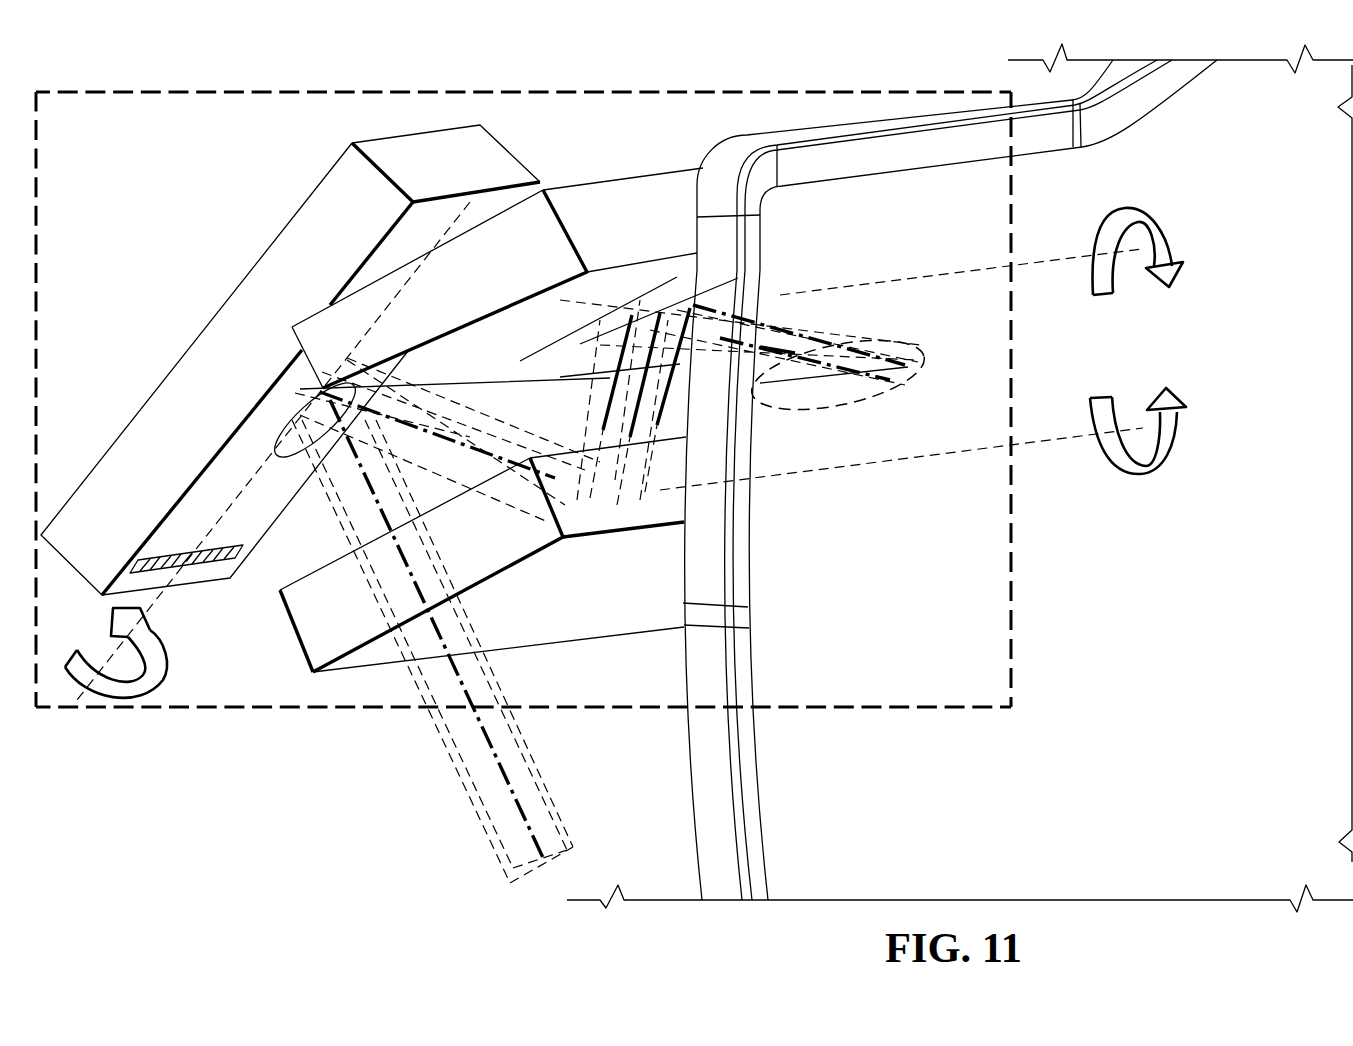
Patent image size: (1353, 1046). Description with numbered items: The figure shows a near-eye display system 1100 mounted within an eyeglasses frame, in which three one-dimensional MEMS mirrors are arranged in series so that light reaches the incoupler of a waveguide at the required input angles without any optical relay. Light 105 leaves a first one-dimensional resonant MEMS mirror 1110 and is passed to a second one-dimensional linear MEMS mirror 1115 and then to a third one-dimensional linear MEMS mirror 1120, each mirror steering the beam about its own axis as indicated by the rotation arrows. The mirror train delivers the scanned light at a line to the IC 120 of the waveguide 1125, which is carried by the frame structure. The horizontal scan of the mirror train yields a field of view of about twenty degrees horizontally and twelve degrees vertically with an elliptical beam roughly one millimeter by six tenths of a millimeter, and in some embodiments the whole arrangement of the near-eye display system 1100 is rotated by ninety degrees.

The near-eye display system 1100 is at (1012, 567).
The first 1-D resonant MEMS mirror 1110 is at (197, 337).
The second 1-D linear MEMS mirror 1115 is at (590, 638).
The third 1-D linear MEMS mirror 1120 is at (623, 180).
The waveguide 1125 is at (1209, 696).
The IC (incoupler) 120 is at (892, 394).
The light beam 105 is at (480, 875).